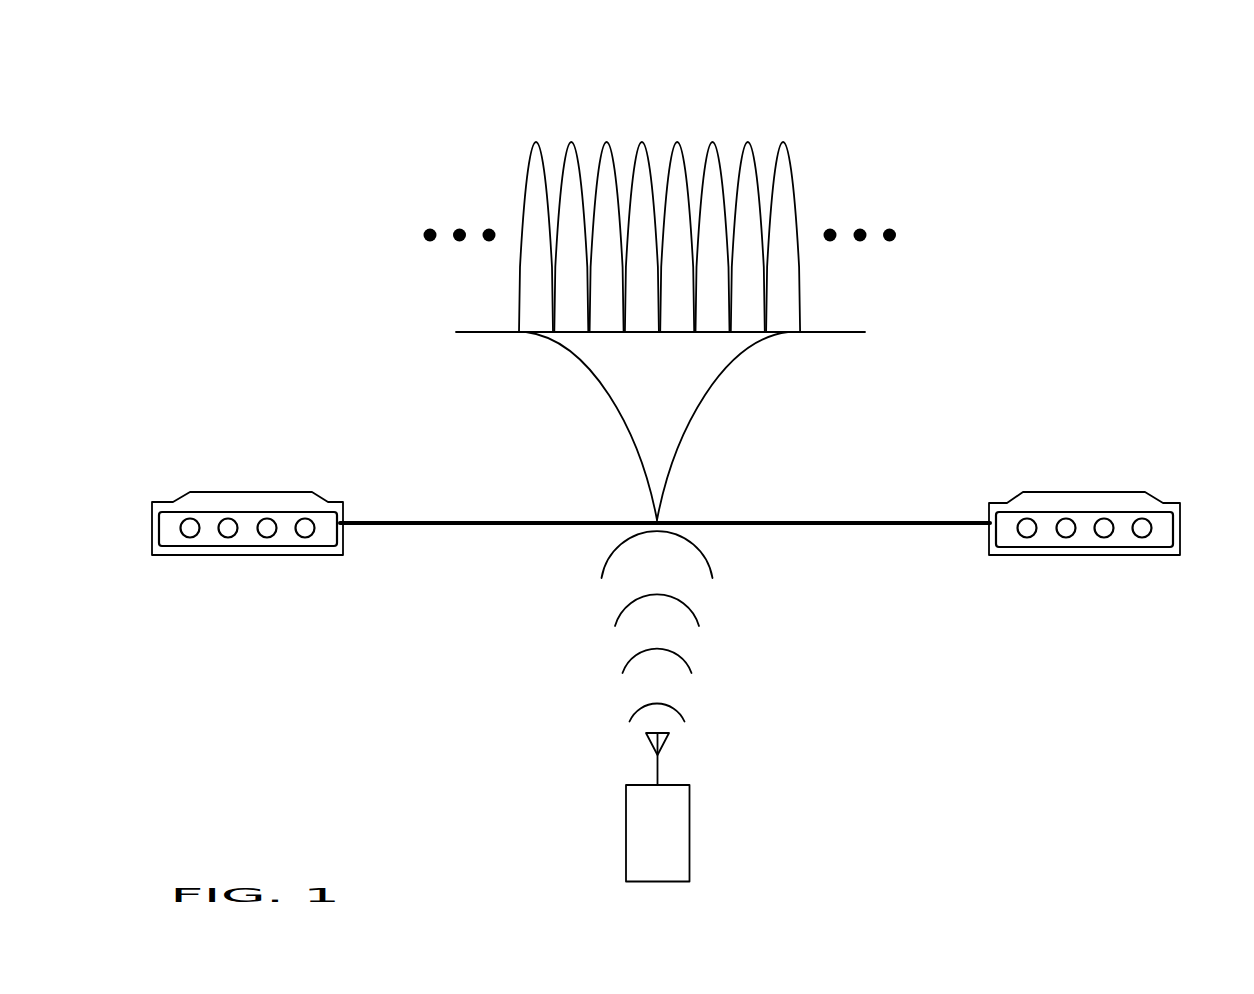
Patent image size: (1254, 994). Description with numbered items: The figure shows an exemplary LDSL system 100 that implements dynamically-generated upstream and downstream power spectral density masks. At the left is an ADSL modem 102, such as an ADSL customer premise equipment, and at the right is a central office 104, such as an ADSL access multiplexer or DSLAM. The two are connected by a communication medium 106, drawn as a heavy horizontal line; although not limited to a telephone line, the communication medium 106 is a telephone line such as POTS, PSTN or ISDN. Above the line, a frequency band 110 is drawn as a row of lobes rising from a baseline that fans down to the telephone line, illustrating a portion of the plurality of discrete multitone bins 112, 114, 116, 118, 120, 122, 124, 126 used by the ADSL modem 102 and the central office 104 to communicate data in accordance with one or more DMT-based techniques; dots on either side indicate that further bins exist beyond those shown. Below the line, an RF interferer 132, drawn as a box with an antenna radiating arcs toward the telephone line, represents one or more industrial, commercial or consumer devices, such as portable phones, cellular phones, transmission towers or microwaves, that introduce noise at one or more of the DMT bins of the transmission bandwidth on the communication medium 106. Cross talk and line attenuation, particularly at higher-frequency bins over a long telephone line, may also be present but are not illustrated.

The LDSL system 100 is at (838, 446).
The ADSL modem 102 is at (248, 490).
The central office 104 is at (1085, 490).
The communication medium 106 is at (405, 519).
The frequency band 110 is at (511, 150).
The DMT bin 112 is at (536, 141).
The DMT bin 114 is at (571, 141).
The DMT bin 116 is at (607, 141).
The DMT bin 118 is at (642, 141).
The DMT bin 120 is at (677, 141).
The DMT bin 122 is at (712, 141).
The DMT bin 124 is at (748, 141).
The DMT bin 126 is at (783, 141).
The RF interferer 132 is at (643, 843).